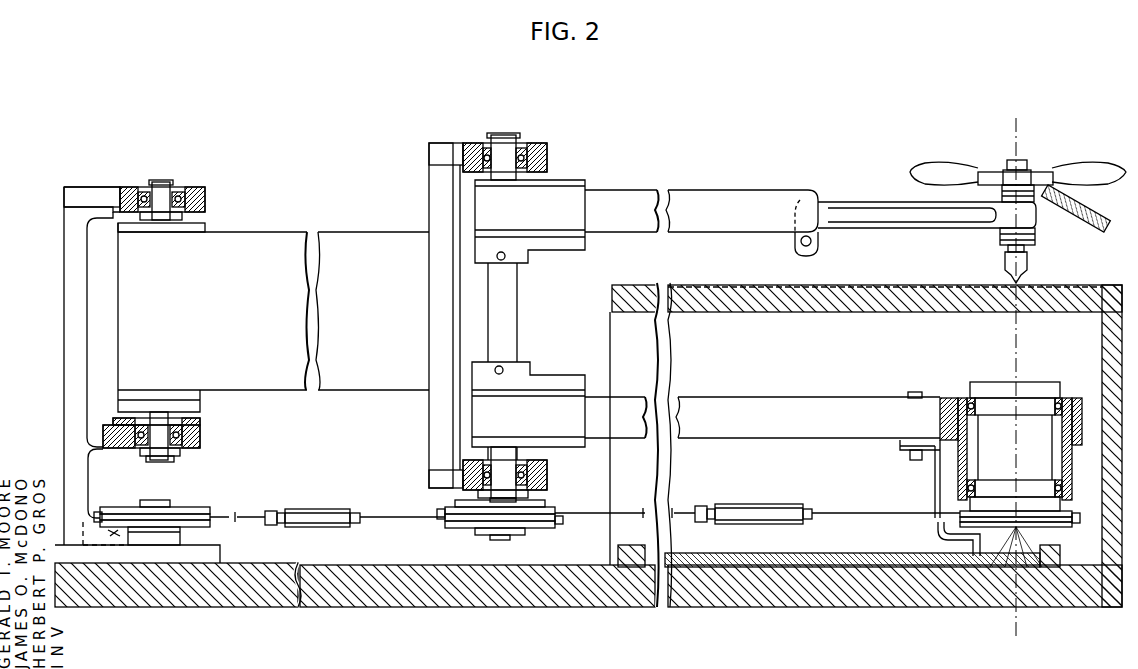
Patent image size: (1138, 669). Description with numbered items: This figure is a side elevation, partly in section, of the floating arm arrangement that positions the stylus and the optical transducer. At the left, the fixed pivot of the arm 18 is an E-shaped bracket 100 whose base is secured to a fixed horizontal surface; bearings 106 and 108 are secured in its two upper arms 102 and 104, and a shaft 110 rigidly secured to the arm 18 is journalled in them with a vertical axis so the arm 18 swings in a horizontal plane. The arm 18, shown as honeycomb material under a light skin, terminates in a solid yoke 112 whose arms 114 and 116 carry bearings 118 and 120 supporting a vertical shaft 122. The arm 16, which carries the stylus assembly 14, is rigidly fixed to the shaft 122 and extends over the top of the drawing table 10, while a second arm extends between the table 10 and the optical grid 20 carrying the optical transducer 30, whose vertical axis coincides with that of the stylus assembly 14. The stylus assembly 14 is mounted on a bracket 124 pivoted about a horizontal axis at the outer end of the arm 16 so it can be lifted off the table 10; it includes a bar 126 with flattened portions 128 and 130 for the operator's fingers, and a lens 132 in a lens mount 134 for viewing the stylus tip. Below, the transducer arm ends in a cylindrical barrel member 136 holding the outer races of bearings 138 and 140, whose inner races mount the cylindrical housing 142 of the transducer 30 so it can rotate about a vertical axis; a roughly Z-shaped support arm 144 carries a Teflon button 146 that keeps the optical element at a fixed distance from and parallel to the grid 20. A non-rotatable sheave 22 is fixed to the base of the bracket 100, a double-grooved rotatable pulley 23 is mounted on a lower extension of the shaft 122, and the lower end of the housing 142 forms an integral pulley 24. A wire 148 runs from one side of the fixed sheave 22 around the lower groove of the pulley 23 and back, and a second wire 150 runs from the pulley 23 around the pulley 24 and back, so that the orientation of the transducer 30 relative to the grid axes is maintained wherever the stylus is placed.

The drawing board or table 10 is at (1077, 286).
The stylus assembly 14 is at (1024, 278).
The arm 16 is at (676, 178).
The arm 18 is at (329, 222).
The optical grid 20 is at (843, 554).
The non-rotatable sheave or pulley 22 is at (181, 508).
The rotatable pulley 23 is at (546, 503).
The sheave or pulley 24 is at (1055, 528).
The optical transducer 30 is at (1042, 455).
The E-shaped bracket 100 is at (64, 302).
The upper arm of bracket 102 is at (100, 186).
The upper arm of bracket 104 is at (125, 451).
The bearing 106 is at (182, 192).
The bearing 108 is at (181, 451).
The shaft 110 is at (166, 182).
The yoke 112 is at (428, 205).
The arm of yoke 114 is at (455, 143).
The arm of yoke 116 is at (428, 482).
The bearing 118 is at (522, 148).
The bearing 120 is at (547, 476).
The shaft 122 is at (517, 310).
The bracket 124 is at (840, 205).
The bar 126 is at (990, 172).
The flattened portion 128 is at (1118, 160).
The flattened portion 130 is at (930, 163).
The lens 132 is at (1085, 213).
The lens mount 134 is at (1062, 160).
The cylindrical barrel member 136 is at (948, 398).
The bearing 138 is at (970, 415).
The bearing 140 is at (968, 486).
The cylindrical housing 142 is at (1000, 382).
The support arm 144 is at (938, 491).
The Teflon button 146 is at (944, 540).
The wire 148 is at (223, 503).
The second wire 150 is at (615, 513).